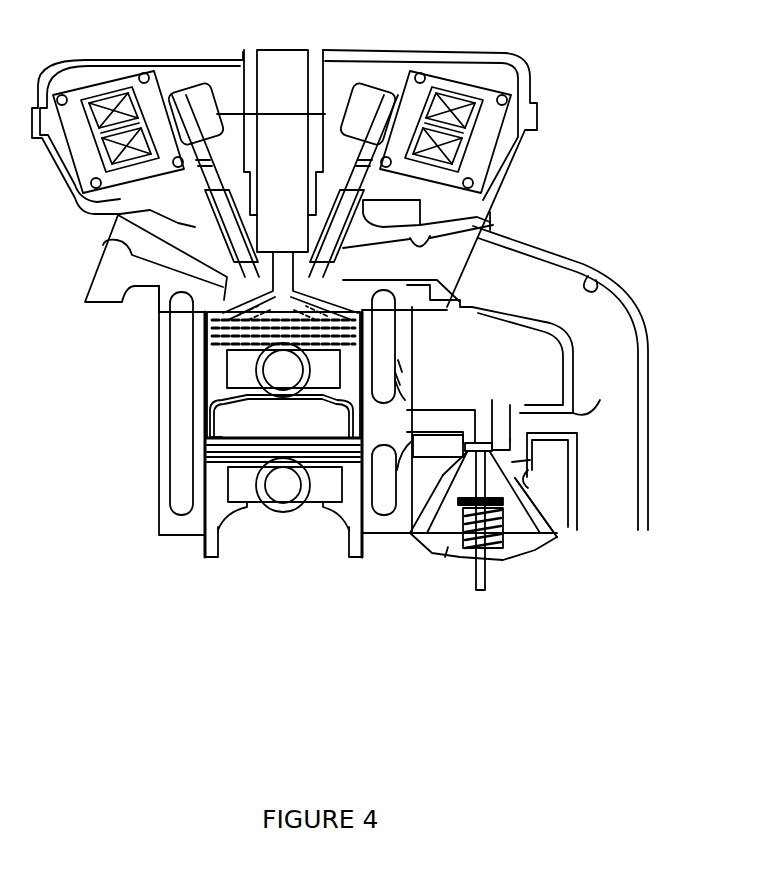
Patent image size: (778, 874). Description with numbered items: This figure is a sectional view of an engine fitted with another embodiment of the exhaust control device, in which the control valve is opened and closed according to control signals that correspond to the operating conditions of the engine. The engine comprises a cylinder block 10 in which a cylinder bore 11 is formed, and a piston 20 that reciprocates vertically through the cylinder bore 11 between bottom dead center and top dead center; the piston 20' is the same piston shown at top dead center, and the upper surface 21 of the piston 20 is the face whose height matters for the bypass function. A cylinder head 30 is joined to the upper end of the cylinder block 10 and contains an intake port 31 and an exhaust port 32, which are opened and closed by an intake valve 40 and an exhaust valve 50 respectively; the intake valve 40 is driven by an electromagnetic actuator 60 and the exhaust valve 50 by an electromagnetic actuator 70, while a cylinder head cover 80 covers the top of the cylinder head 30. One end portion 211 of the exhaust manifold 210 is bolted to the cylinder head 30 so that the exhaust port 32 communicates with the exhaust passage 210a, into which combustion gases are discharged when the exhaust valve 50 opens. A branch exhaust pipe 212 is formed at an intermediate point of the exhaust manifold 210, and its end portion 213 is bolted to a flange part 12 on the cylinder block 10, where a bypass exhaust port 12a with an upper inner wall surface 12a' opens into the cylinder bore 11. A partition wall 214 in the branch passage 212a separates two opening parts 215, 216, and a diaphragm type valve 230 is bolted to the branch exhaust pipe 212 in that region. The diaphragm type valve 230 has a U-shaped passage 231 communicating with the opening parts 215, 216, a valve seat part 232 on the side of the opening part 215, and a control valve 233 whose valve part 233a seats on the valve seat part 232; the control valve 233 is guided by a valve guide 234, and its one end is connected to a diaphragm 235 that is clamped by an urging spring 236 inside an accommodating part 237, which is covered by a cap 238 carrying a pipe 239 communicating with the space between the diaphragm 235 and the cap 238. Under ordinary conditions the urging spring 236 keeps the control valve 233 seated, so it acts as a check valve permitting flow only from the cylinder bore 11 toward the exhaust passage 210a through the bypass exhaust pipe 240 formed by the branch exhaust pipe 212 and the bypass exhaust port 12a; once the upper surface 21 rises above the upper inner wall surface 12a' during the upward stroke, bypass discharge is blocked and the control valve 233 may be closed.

The cylinder block 10 is at (159, 502).
The cylinder bore 11 is at (208, 477).
The flange part 12 is at (402, 395).
The bypass exhaust port 12a is at (428, 358).
The upper inner wall surface of the bypass exhaust port 12a' is at (429, 343).
The piston 20 is at (283, 510).
The piston at top dead center 20' is at (240, 375).
The upper surface of the piston 21 is at (215, 440).
The cylinder head 30 is at (147, 296).
The intake port 31 is at (103, 245).
The exhaust port 32 is at (484, 196).
The intake valve 40 is at (112, 215).
The exhaust valve 50 is at (490, 174).
The electromagnetic actuator 60 is at (118, 72).
The electromagnetic actuator 70 is at (447, 66).
The cylinder head cover 80 is at (348, 52).
The exhaust manifold 210 is at (545, 243).
The exhaust passage 210a is at (588, 276).
The one end portion of the exhaust manifold 211 is at (495, 224).
The branch exhaust pipe 212 is at (533, 405).
The branch passage 212a is at (590, 412).
The end portion of the branch exhaust pipe 213 is at (420, 399).
The partition wall 214 is at (507, 413).
The opening part 215 is at (475, 410).
The opening part 216 is at (515, 413).
The diaphragm type valve 230 is at (560, 570).
The U-shaped passage 231 is at (528, 478).
The valve seat part 232 is at (437, 455).
The control valve 233 is at (448, 557).
The valve part 233a is at (530, 460).
The valve guide 234 is at (547, 533).
The diaphragm 235 is at (503, 560).
The urging spring 236 is at (470, 560).
The accommodating part 237 is at (440, 537).
The cap 238 is at (497, 567).
The pipe 239 is at (484, 592).
The bypass exhaust pipe 240 is at (435, 455).